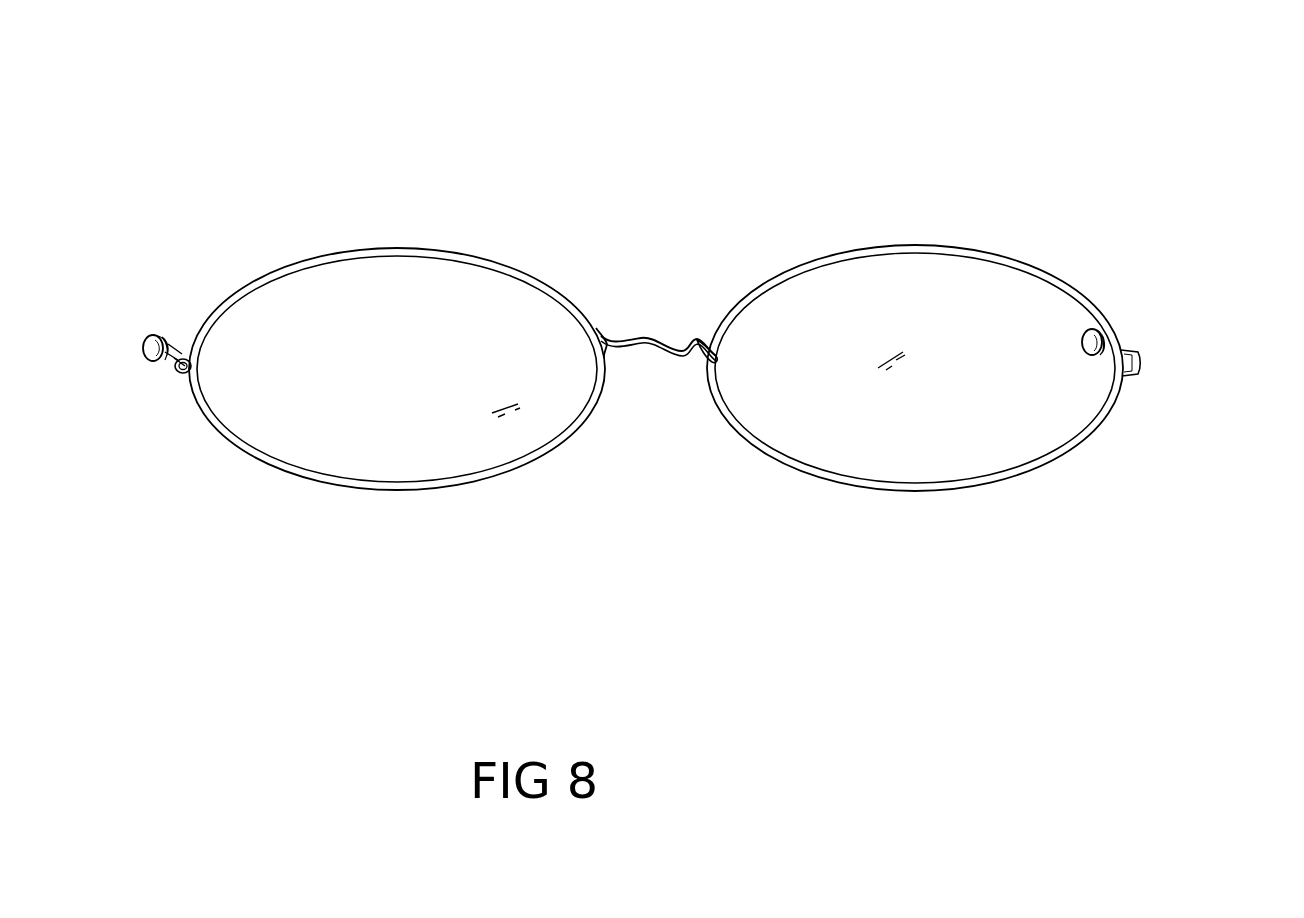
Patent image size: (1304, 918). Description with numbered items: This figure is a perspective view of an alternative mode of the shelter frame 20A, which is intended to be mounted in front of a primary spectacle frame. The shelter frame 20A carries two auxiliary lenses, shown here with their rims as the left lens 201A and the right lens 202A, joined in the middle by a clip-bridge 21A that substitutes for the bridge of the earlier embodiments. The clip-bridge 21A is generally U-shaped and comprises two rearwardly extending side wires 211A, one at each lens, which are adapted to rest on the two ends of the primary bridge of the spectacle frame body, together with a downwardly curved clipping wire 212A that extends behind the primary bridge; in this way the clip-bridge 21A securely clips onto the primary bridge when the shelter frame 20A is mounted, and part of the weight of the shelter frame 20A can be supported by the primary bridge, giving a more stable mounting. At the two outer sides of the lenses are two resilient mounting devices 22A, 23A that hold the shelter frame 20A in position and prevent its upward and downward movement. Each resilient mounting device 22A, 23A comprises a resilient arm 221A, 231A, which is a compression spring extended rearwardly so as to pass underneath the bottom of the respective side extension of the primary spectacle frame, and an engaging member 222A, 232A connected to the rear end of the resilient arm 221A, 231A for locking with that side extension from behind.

The shelter frame 20A is at (695, 170).
The left lens rim 201A is at (395, 460).
The right lens rim 202A is at (937, 458).
The clip-bridge 21A is at (667, 333).
The side wires 211A is at (598, 300).
The clipping wire 212A is at (647, 343).
The resilient mounting device 22A is at (153, 308).
The resilient arm 221A is at (173, 337).
The engaging member 222A is at (143, 350).
The resilient mounting device 23A is at (1100, 340).
The resilient arm 231A is at (1113, 338).
The engaging member 232A is at (1084, 344).